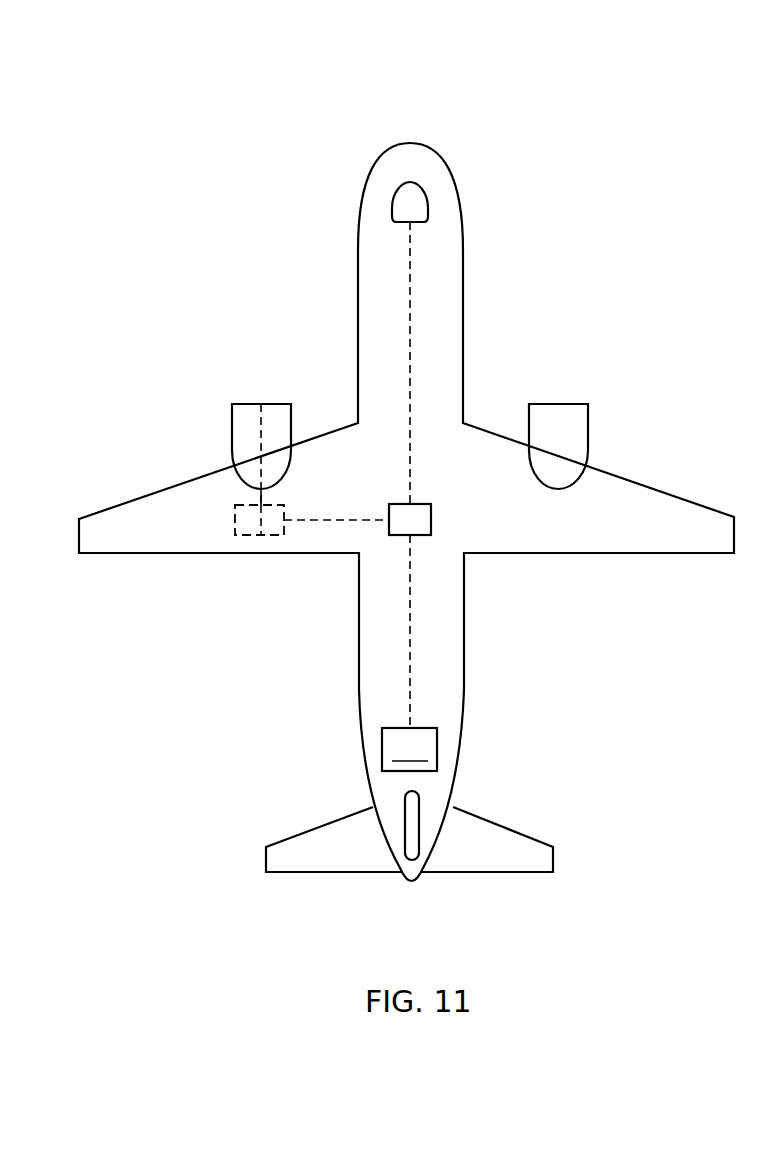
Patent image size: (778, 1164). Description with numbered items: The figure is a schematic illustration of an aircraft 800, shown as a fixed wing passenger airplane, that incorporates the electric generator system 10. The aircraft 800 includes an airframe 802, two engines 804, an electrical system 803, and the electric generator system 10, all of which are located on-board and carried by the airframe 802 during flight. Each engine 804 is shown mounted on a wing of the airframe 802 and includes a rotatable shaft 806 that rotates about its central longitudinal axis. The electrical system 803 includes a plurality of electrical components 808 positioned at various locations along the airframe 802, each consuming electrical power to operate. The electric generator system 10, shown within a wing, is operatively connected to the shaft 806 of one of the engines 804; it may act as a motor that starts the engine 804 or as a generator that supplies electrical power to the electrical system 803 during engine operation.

The aircraft 800 is at (582, 60).
The airframe 802 is at (359, 638).
The engine 804 is at (242, 401).
The rotatable shaft 806 is at (262, 462).
The electric generator system 10 is at (245, 538).
The electrical system 803 is at (436, 204).
The electrical component 808 is at (427, 180).